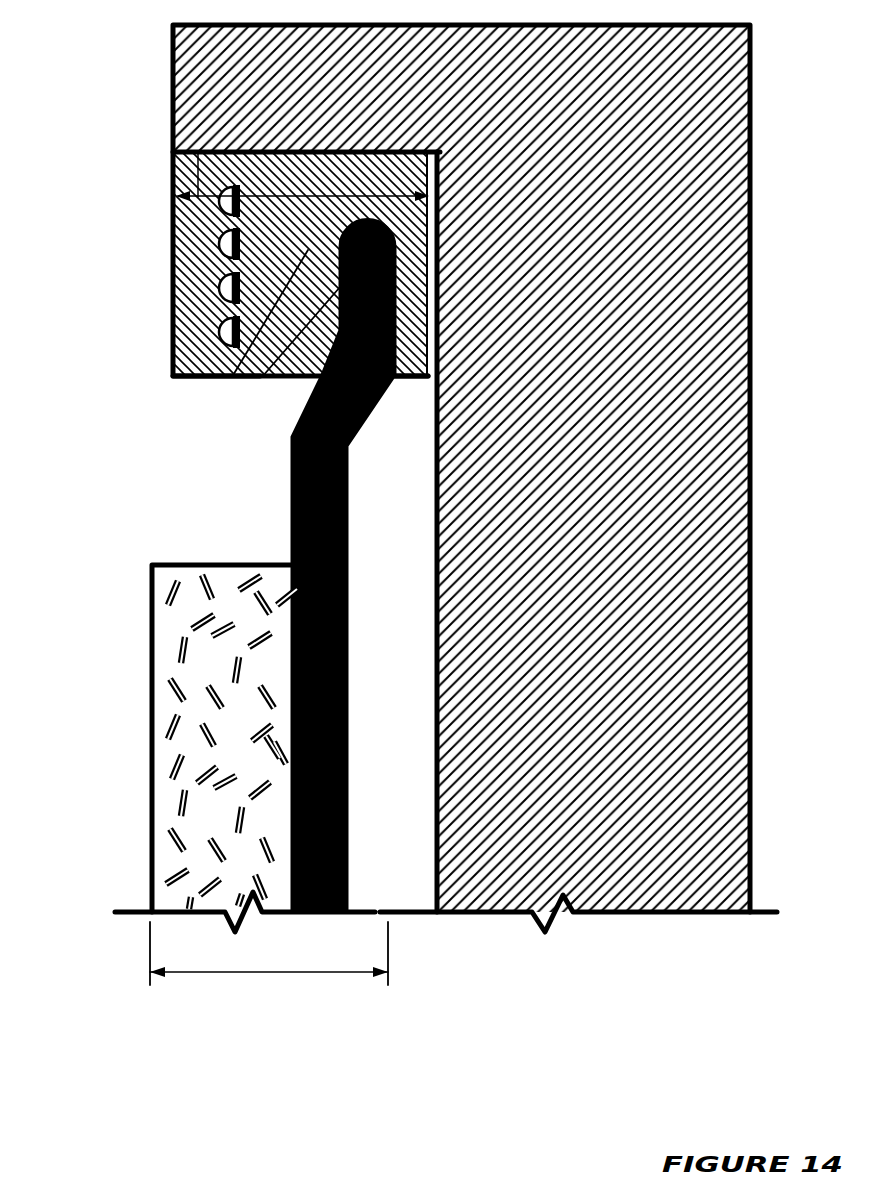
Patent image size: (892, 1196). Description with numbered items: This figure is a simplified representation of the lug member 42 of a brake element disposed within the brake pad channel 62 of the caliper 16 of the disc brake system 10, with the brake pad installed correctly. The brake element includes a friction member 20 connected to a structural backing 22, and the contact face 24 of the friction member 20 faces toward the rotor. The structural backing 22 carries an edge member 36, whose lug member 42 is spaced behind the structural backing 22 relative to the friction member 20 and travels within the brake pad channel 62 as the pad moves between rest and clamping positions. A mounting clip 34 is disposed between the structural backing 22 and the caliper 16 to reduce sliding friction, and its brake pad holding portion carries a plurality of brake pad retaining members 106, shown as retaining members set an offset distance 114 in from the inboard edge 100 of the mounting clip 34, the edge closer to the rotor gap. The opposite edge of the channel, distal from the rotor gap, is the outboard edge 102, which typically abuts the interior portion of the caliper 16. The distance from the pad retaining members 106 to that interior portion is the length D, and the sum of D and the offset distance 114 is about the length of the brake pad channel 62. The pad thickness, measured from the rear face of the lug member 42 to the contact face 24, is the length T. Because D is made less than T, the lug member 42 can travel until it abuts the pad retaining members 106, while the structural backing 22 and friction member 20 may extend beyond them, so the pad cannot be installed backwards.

The disc brake system 10 is at (503, 468).
The caliper 16 is at (715, 425).
The friction member 20 is at (180, 637).
The structural backing 22 is at (346, 712).
The contact face 24 is at (171, 738).
The mounting clip 34 is at (170, 380).
The edge member 36 is at (356, 566).
The lug member 42 is at (262, 377).
The brake pad channel 62 is at (232, 377).
The inboard edge 100 is at (223, 308).
The outboard edge 102 is at (417, 373).
The brake pad retaining members 106 is at (218, 332).
The offset distance 114 is at (198, 152).
The length D is at (298, 188).
The length T is at (273, 976).